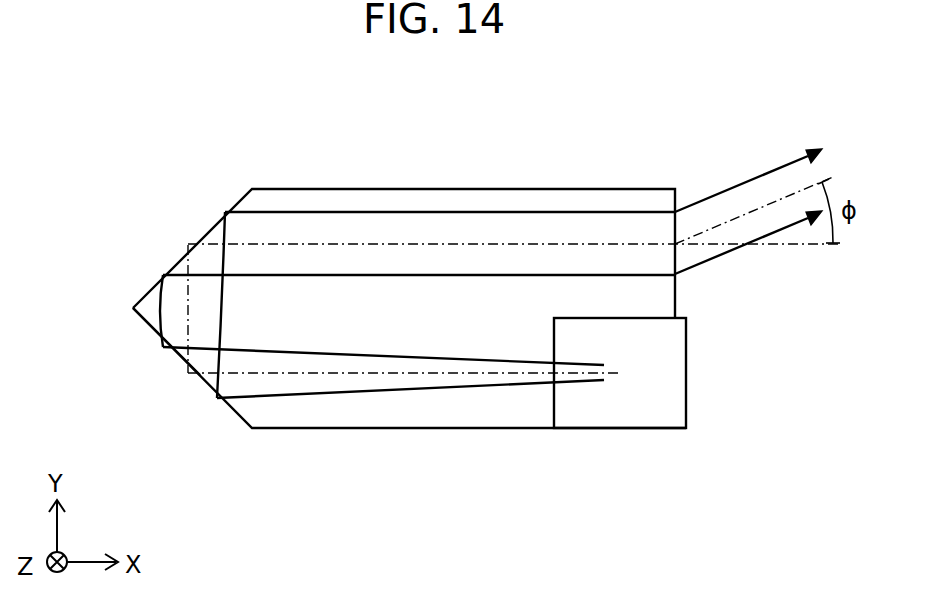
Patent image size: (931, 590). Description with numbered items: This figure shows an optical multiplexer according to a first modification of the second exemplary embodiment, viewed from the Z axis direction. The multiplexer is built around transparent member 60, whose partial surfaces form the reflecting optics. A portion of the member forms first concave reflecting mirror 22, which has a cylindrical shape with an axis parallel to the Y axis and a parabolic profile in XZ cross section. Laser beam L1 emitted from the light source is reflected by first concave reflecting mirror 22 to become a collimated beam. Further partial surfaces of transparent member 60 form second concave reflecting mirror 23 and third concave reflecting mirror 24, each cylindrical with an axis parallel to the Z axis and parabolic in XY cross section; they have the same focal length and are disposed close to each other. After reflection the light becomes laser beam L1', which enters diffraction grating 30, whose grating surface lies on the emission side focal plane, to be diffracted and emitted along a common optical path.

The first concave reflecting mirror 22 is at (643, 405).
The second concave reflecting mirror 23 is at (175, 362).
The third concave reflecting mirror 24 is at (175, 252).
The diffraction grating 30 is at (680, 198).
The transparent member 60 is at (498, 189).
The laser beam L1 is at (383, 413).
The laser beam L1' is at (359, 181).